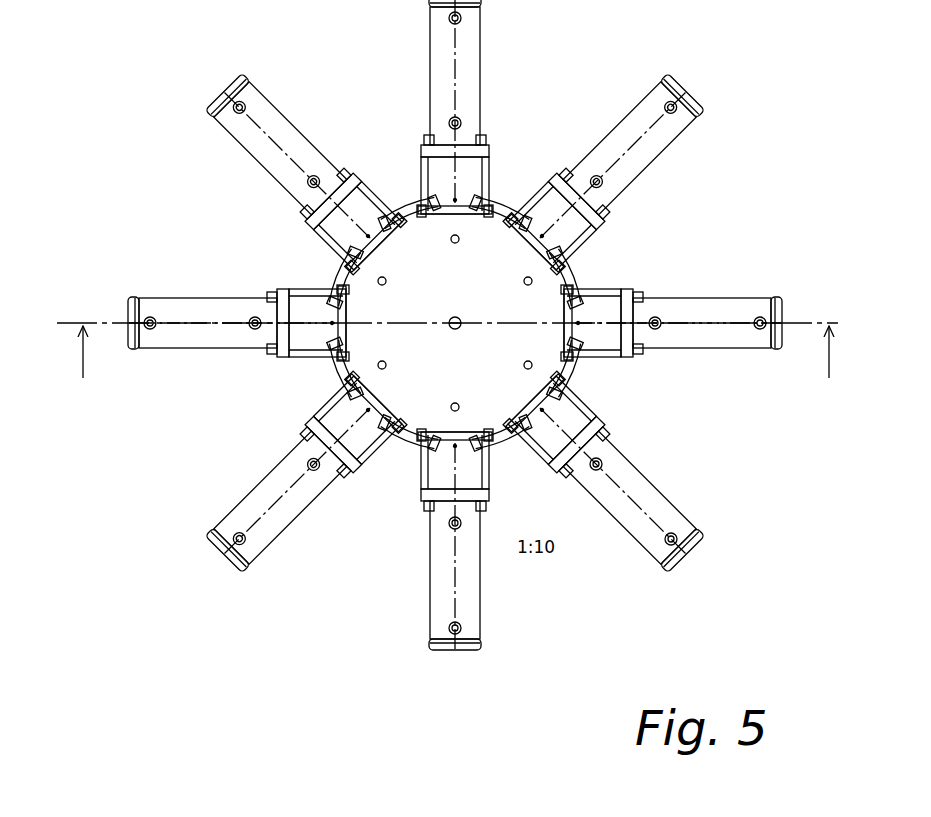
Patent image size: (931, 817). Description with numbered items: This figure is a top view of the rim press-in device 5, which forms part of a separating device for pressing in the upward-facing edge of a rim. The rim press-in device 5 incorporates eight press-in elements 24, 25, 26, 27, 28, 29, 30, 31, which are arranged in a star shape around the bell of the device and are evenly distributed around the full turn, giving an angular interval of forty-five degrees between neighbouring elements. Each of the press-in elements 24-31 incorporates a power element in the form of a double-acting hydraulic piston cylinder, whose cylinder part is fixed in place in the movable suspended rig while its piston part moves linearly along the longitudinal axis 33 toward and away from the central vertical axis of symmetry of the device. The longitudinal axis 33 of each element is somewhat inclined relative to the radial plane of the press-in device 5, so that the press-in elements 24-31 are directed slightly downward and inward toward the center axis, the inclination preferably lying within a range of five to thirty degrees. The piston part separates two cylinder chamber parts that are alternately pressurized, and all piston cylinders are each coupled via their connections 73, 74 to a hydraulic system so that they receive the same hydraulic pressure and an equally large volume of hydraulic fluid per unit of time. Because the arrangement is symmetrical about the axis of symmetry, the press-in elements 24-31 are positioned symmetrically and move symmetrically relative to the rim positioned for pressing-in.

The rim press-in device 5 is at (640, 237).
The press-in element 24 is at (717, 350).
The press-in element 25 is at (620, 522).
The press-in element 26 is at (428, 574).
The press-in element 27 is at (290, 530).
The press-in element 28 is at (203, 348).
The press-in element 29 is at (262, 170).
The press-in element 30 is at (430, 70).
The press-in element 31 is at (614, 124).
The longitudinal axis 33 is at (800, 318).
The connection 73 is at (603, 460).
The connection 74 is at (684, 528).